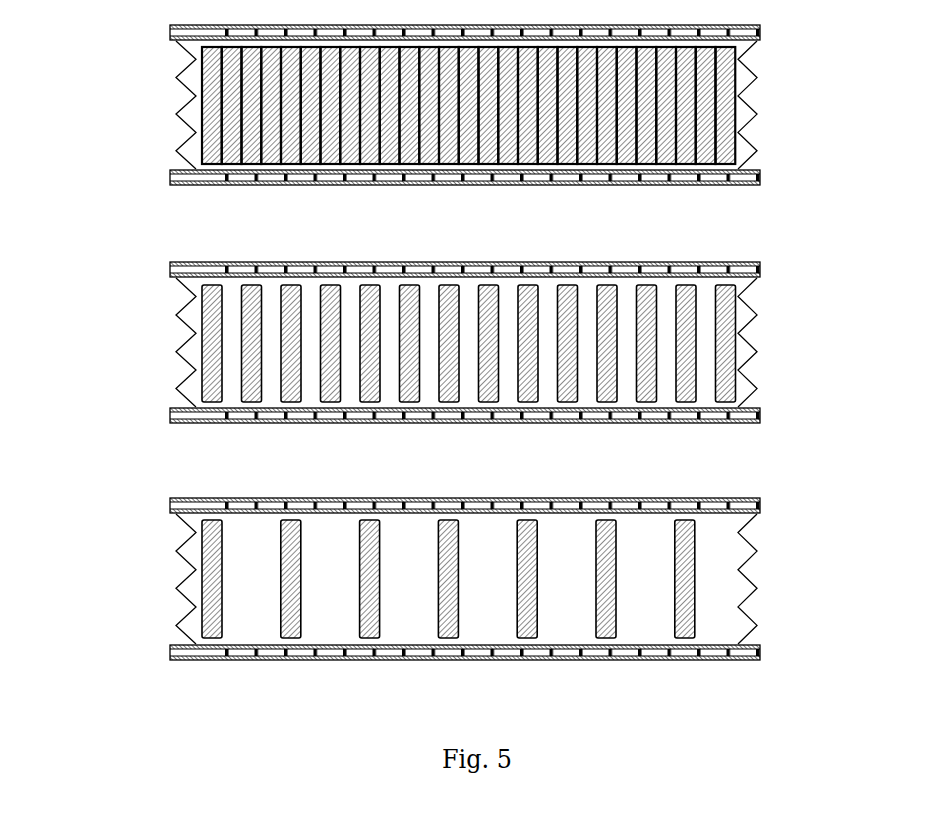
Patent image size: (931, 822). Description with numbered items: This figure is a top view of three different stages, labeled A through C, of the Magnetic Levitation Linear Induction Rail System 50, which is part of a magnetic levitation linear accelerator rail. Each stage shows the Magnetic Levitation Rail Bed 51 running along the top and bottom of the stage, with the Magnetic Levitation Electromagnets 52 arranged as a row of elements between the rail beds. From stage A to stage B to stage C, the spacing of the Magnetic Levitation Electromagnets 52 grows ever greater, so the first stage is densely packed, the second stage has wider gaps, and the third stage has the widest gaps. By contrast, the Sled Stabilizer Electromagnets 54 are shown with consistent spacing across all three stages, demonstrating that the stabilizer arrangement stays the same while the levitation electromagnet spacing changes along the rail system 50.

The magnetic levitation linear induction rail system 50 is at (450, 345).
The magnetic levitation rail bed 51 is at (178, 177).
The magnetic levitation electromagnets 52 is at (655, 172).
The sled stabilizer electromagnets 54 is at (788, 339).